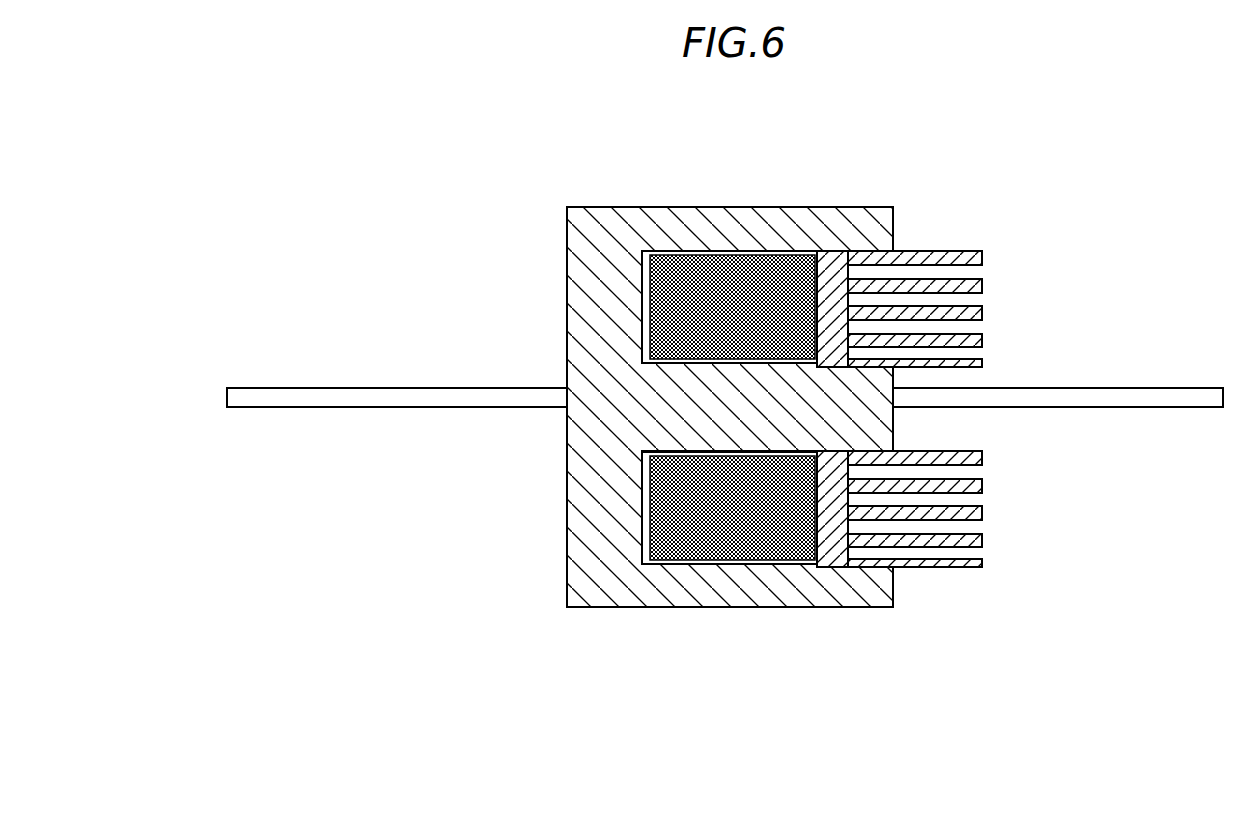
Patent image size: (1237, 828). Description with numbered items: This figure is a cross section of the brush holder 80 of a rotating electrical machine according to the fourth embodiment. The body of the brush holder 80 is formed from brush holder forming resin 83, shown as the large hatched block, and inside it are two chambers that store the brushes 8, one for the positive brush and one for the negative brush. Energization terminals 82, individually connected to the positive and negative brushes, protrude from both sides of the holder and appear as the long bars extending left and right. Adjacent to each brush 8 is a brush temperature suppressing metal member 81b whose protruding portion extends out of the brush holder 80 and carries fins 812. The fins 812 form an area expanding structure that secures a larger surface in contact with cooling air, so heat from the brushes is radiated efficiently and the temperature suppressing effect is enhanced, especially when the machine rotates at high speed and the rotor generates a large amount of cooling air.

The brush holder 80 is at (326, 138).
The brushes 8 is at (697, 277).
The brush temperature suppressing metal member 81b is at (840, 265).
The fins 812 is at (985, 330).
The energization terminals 82 is at (328, 388).
The brush holder forming resin 83 is at (582, 514).